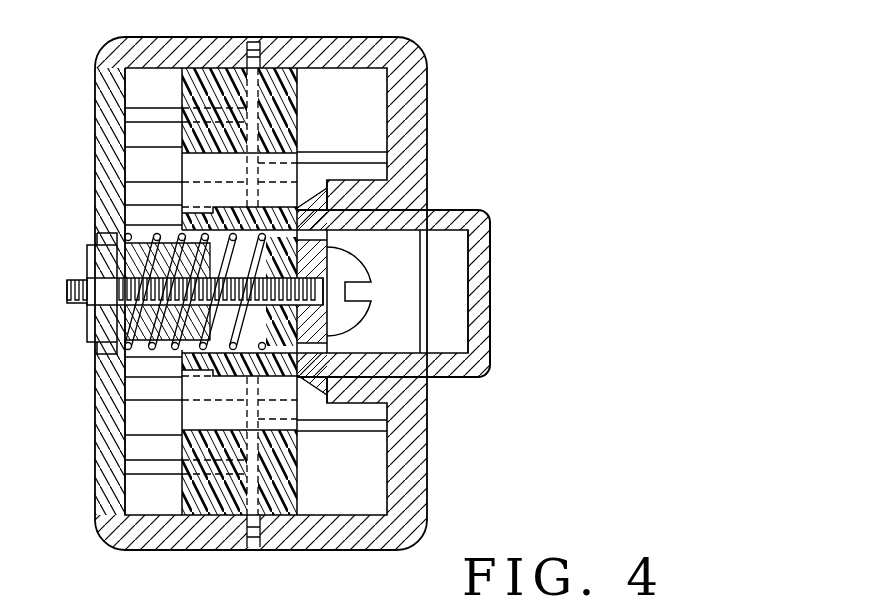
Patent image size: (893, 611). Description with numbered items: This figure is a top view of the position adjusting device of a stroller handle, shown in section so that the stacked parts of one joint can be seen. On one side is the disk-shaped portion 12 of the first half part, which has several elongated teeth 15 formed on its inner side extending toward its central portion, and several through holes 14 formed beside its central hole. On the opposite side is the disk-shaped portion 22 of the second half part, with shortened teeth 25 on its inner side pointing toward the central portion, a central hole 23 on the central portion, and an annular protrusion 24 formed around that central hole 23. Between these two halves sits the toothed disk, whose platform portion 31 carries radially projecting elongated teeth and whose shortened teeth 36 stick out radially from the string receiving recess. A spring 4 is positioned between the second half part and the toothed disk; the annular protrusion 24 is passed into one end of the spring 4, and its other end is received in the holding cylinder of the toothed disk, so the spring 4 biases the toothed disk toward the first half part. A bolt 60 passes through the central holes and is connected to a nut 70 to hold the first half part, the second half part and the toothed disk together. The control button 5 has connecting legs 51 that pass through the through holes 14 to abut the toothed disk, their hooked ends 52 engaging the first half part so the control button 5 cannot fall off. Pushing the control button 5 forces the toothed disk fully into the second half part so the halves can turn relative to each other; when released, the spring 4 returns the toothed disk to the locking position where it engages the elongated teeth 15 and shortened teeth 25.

The spring 4 is at (160, 360).
The control button 5 is at (485, 282).
The disk-shaped portion 12 is at (423, 82).
The through hole 14 is at (427, 378).
The elongated teeth 15 is at (370, 87).
The disk-shaped portion 22 is at (107, 74).
The central hole 23 is at (137, 308).
The annular protrusion 24 is at (137, 253).
The shortened teeth 25 is at (133, 98).
The platform portion 31 is at (447, 226).
The shortened teeth 36 is at (208, 80).
The connecting leg 51 is at (380, 202).
The hooked end 52 is at (308, 192).
The bolt 60 is at (353, 277).
The nut 70 is at (95, 262).